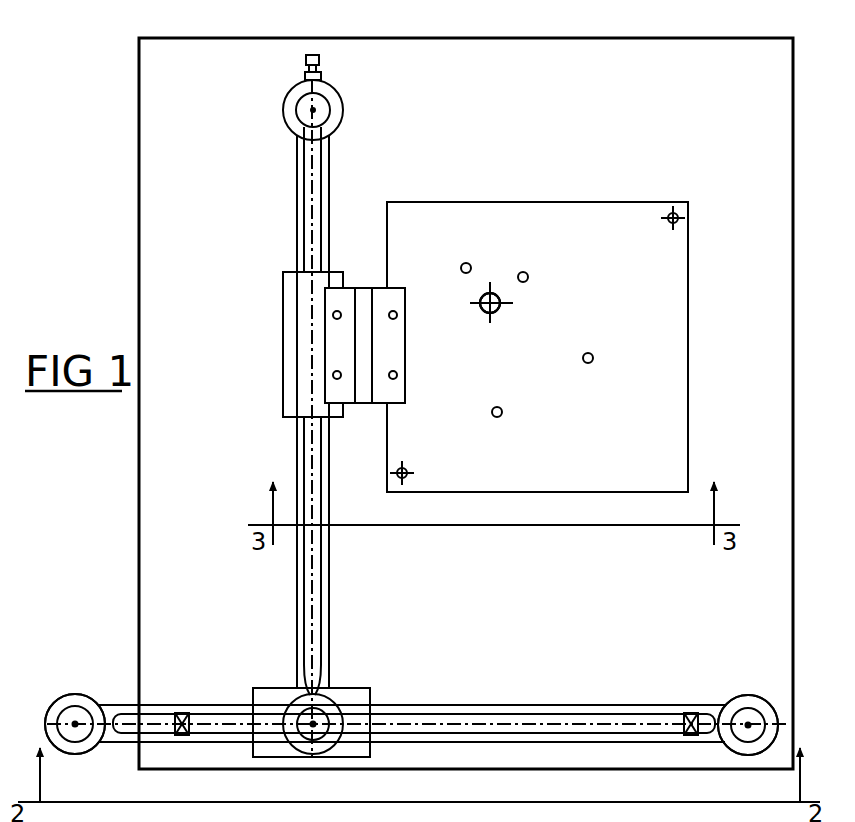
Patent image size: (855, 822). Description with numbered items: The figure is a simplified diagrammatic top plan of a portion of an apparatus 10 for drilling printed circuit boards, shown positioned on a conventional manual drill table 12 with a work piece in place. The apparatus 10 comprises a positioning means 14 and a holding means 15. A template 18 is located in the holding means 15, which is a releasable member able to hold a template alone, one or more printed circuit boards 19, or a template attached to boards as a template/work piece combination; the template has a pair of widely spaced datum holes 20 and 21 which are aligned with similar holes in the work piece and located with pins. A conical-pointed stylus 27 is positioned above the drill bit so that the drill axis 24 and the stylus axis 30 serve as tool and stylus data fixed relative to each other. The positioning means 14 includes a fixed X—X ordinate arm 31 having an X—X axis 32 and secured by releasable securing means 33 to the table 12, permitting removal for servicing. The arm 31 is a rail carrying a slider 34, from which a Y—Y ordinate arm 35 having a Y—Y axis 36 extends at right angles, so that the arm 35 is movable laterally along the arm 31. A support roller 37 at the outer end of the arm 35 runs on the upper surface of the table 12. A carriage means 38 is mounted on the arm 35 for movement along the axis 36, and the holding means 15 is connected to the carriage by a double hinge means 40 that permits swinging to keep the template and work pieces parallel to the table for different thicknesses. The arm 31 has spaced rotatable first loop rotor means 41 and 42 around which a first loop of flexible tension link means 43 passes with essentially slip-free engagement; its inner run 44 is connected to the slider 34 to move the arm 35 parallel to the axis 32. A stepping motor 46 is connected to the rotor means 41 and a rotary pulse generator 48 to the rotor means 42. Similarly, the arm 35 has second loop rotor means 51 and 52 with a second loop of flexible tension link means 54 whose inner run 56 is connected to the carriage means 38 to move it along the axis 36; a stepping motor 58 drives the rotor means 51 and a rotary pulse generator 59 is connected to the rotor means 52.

The apparatus 10 is at (136, 545).
The manual drill table 12 is at (614, 113).
The positioning means 14 is at (281, 330).
The holding means 15 is at (372, 278).
The template 18 is at (668, 288).
The printed circuit boards 19 is at (537, 347).
The datum hole 20 is at (668, 218).
The datum hole 21 is at (407, 470).
The drill axis 24 is at (497, 310).
The conical-pointed stylus 27 is at (498, 297).
The stylus axis 30 is at (490, 303).
The X—X ordinate arm 31 is at (541, 716).
The X—X axis 32 is at (430, 725).
The releasable securing means 33 is at (185, 712).
The slider 34 is at (357, 751).
The Y—Y ordinate arm 35 is at (295, 549).
The Y—Y axis 36 is at (312, 503).
The support roller 37 is at (319, 58).
The carriage means 38 is at (283, 358).
The double hinge means 40 is at (366, 392).
The first loop rotor means 41 is at (63, 712).
The first loop rotor means 42 is at (746, 740).
The first loop of flexible tension link means 43 is at (492, 705).
The inner run 44 is at (608, 708).
The stepping motor 46 is at (50, 722).
The rotary pulse generator 48 is at (742, 697).
The second loop rotor means 51 is at (323, 718).
The second loop rotor means 52 is at (320, 112).
The second loop of flexible tension link means 54 is at (295, 453).
The inner run 56 is at (329, 562).
The stepping motor 58 is at (318, 708).
The rotary pulse generator 59 is at (340, 92).